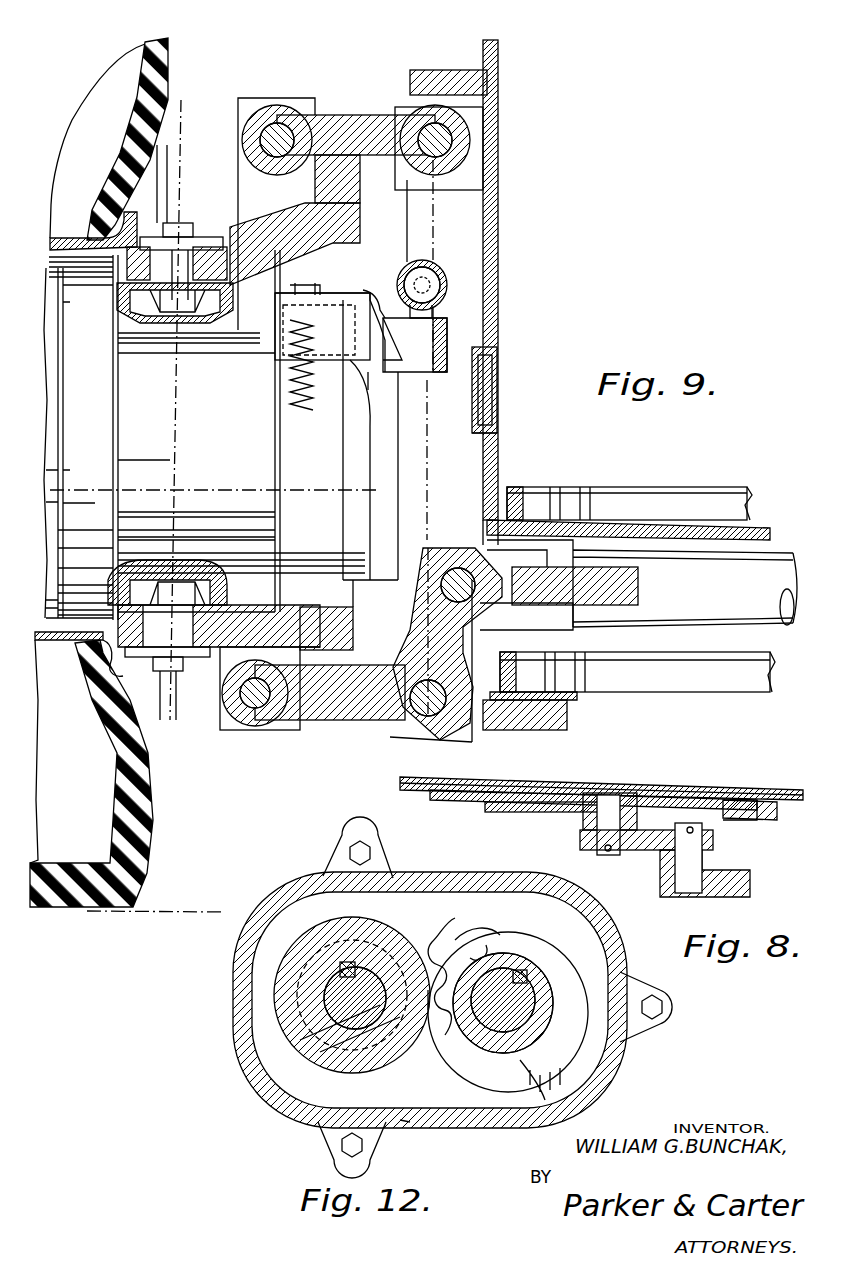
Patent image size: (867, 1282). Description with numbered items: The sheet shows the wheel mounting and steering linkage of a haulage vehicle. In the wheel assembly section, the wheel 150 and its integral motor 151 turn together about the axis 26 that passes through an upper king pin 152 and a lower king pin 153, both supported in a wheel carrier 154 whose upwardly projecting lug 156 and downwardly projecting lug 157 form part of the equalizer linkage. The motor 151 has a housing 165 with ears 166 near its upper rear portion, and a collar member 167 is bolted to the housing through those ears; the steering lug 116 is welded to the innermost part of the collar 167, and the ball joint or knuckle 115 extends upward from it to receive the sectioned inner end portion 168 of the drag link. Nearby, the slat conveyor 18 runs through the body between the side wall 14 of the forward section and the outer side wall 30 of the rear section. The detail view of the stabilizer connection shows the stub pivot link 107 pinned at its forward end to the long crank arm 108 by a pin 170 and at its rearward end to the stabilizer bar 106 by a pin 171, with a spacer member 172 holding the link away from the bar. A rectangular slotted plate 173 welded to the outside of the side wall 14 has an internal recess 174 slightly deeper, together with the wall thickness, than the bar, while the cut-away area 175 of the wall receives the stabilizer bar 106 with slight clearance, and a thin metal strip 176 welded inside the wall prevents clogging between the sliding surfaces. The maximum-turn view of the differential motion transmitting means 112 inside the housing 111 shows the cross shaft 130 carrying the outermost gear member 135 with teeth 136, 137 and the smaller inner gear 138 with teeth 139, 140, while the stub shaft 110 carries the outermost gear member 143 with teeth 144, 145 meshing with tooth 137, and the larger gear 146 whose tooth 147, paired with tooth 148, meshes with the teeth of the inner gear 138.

In FIG. 9, the side wall 14 is at (499, 303).
In FIG. 8, the side wall 14 is at (796, 790).
In FIG. 9, the slat conveyor 18 is at (716, 482).
In FIG. 9, the axis 26 is at (184, 128).
In FIG. 9, the outer side wall 30 is at (500, 130).
In FIG. 9, the stabilizer bar 106 is at (484, 372).
In FIG. 8, the stabilizer bar 106 is at (462, 805).
In FIG. 8, the stub pivot link 107 is at (638, 850).
In FIG. 8, the long crank arm 108 is at (752, 884).
In FIG. 12, the stub shaft 110 is at (520, 1082).
In FIG. 12, the housing 111 is at (435, 1122).
In FIG. 12, the differential motion transmitting means 112 is at (222, 1000).
In FIG. 9, the knuckle 115 is at (428, 282).
In FIG. 9, the lug 116 is at (418, 350).
In FIG. 12, the cross shaft 130 is at (310, 1045).
In FIG. 12, the outermost gear member 135 is at (330, 1050).
In FIG. 12, the tooth 136 is at (437, 1045).
In FIG. 12, the tooth 137 is at (386, 1030).
In FIG. 12, the inner gear 138 is at (285, 1028).
In FIG. 12, the tooth 139 is at (392, 930).
In FIG. 12, the tooth 140 is at (442, 942).
In FIG. 12, the outermost gear member 143 is at (585, 1065).
In FIG. 12, the tooth 144 is at (452, 1030).
In FIG. 12, the tooth 145 is at (480, 948).
In FIG. 12, the larger gear 146 is at (600, 1040).
In FIG. 12, the tooth 147 is at (478, 948).
In FIG. 12, the tooth 148 is at (455, 935).
In FIG. 9, the wheel 150 is at (186, 58).
In FIG. 9, the motor 151 is at (244, 305).
In FIG. 9, the king pin 152 is at (148, 300).
In FIG. 9, the king pin 153 is at (175, 640).
In FIG. 9, the wheel carrier 154 is at (283, 222).
In FIG. 9, the upwardly projecting lug 156 is at (308, 191).
In FIG. 9, the downwardly projecting lug 157 is at (232, 732).
In FIG. 9, the housing 165 is at (378, 468).
In FIG. 9, the ears 166 is at (275, 400).
In FIG. 9, the collar member 167 is at (352, 300).
In FIG. 9, the inner end portion 168 is at (410, 262).
In FIG. 8, the pin 170 is at (680, 888).
In FIG. 8, the pin 171 is at (598, 850).
In FIG. 8, the spacer member 172 is at (582, 823).
In FIG. 8, the rectangular slotted plate 173 is at (763, 822).
In FIG. 8, the internal recess 174 is at (758, 795).
In FIG. 9, the cut-away area 175 is at (488, 410).
In FIG. 8, the cut-away area 175 is at (663, 795).
In FIG. 9, the thin metal strip 176 is at (488, 350).
In FIG. 8, the thin metal strip 176 is at (536, 782).